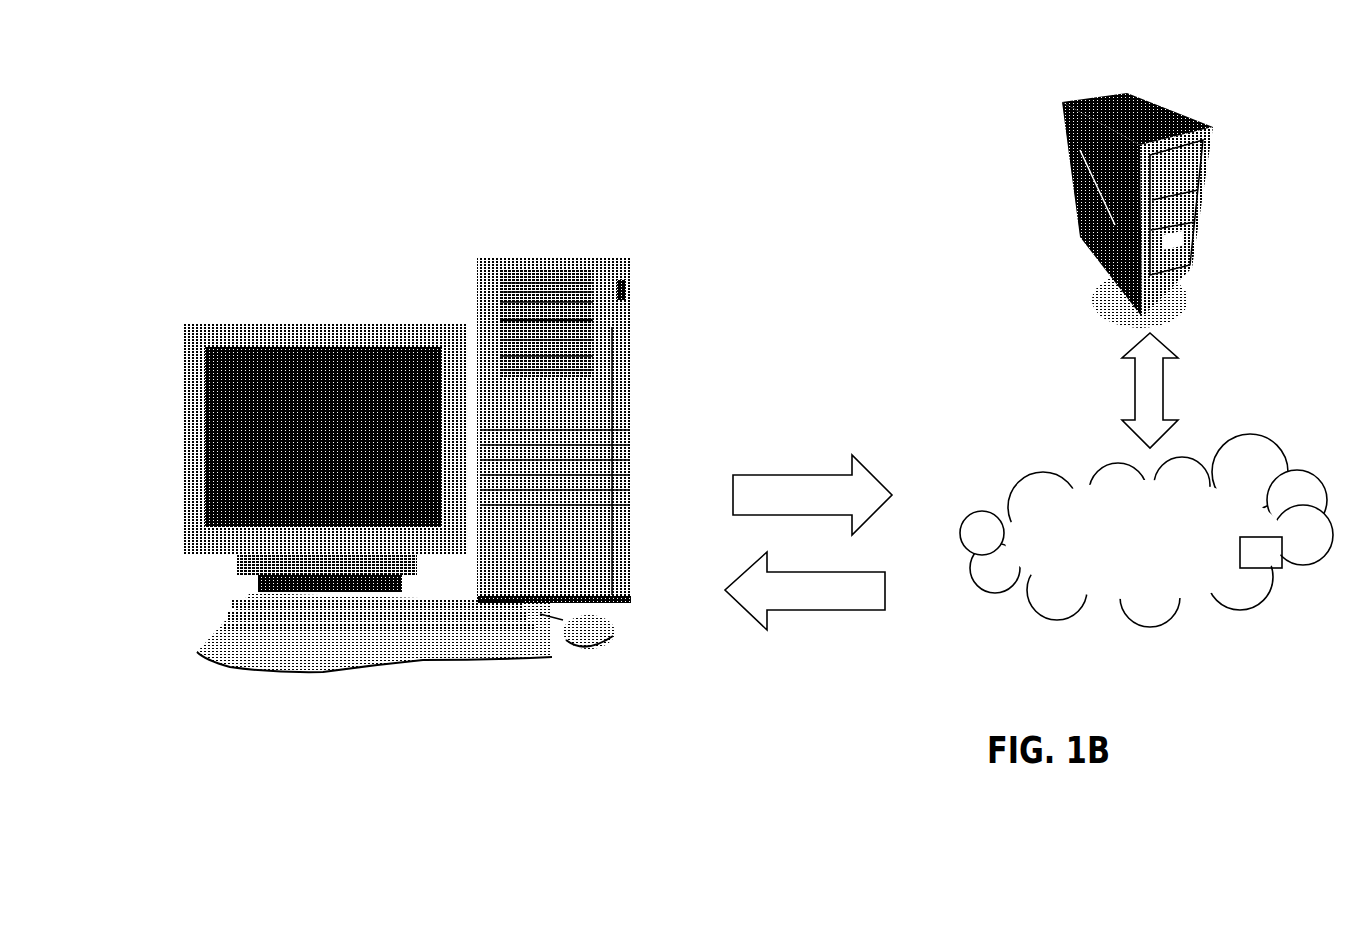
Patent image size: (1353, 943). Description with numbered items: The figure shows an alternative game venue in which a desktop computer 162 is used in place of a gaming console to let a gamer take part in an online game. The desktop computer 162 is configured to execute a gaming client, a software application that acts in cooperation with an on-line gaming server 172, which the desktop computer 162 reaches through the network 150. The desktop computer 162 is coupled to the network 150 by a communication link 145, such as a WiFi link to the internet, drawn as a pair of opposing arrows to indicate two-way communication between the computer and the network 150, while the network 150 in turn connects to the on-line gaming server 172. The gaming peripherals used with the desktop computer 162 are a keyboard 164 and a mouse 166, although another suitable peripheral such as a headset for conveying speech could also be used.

The communication link 145 is at (818, 462).
The network 150 is at (1161, 576).
The desktop computer 162 is at (547, 268).
The keyboard 164 is at (348, 658).
The mouse 166 is at (592, 648).
The on-line gaming server 172 is at (1192, 120).